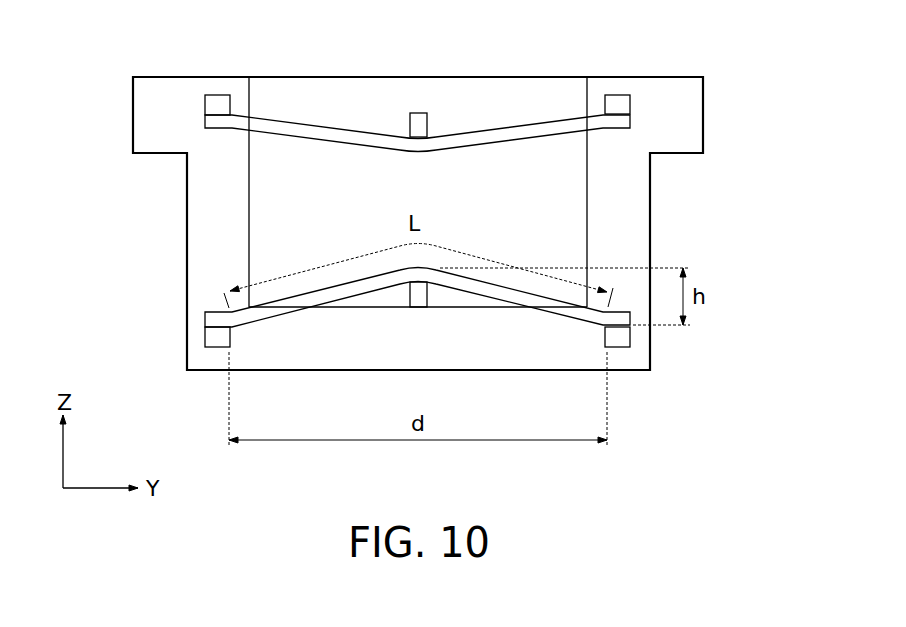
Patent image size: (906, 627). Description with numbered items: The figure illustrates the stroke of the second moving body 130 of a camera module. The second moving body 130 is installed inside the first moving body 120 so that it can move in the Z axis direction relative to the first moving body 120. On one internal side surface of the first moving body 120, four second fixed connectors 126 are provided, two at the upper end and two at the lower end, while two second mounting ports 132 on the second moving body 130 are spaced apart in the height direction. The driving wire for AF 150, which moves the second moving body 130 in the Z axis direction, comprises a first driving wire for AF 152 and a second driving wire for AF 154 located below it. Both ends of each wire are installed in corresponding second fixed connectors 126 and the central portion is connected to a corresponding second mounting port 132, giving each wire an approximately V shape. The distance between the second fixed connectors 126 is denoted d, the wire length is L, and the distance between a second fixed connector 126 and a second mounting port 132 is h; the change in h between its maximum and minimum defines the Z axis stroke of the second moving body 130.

The first moving body 120 is at (683, 115).
The second fixed connector 126 is at (217, 102).
The second moving body 130 is at (518, 100).
The second mounting port 132 is at (418, 127).
The driving wire for AF 150 is at (90, 198).
The first driving wire for AF 152 is at (325, 133).
The second driving wire for AF 154 is at (347, 288).